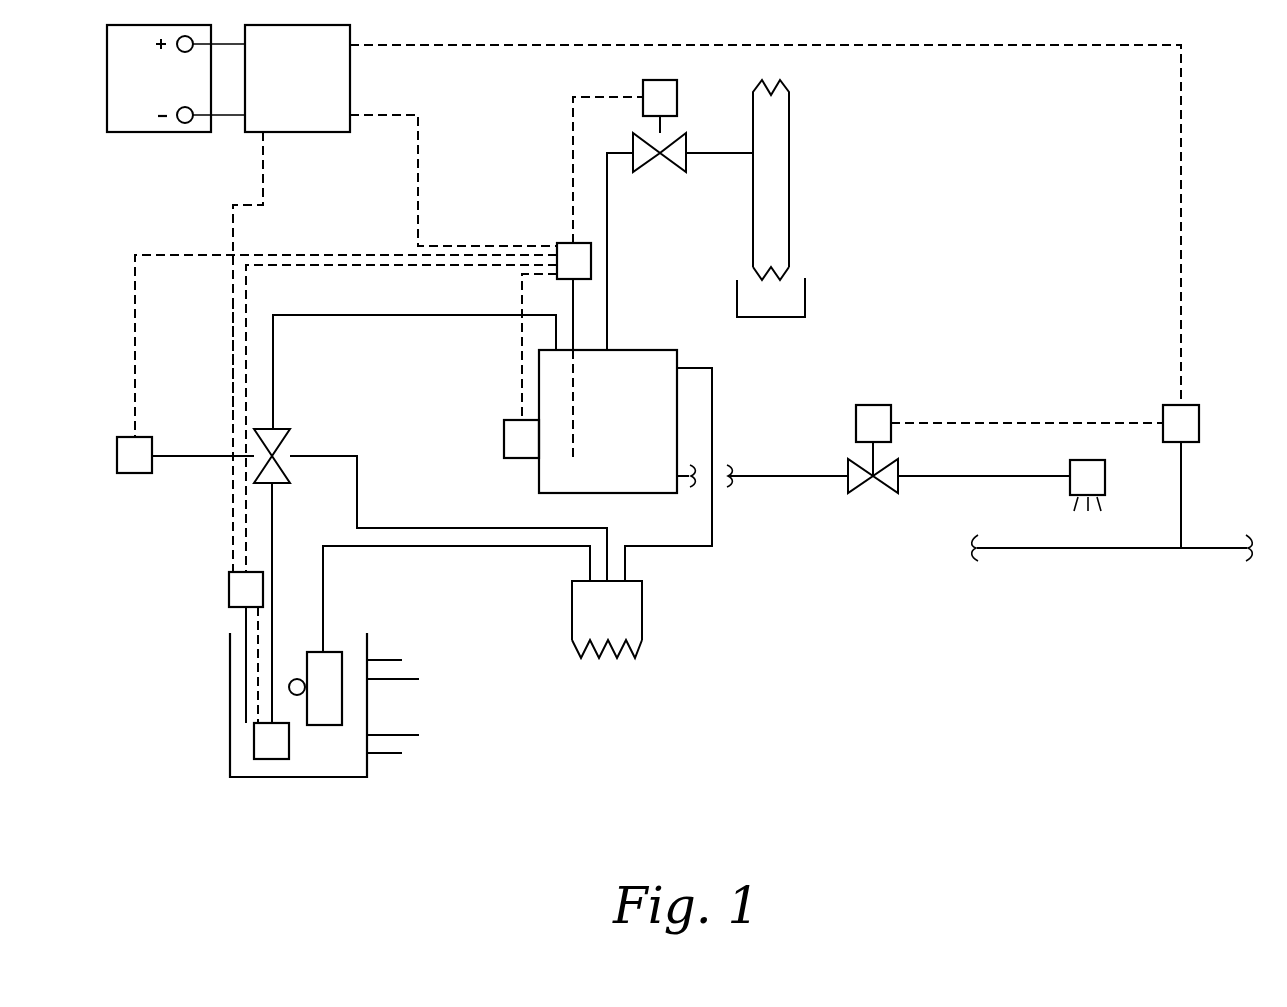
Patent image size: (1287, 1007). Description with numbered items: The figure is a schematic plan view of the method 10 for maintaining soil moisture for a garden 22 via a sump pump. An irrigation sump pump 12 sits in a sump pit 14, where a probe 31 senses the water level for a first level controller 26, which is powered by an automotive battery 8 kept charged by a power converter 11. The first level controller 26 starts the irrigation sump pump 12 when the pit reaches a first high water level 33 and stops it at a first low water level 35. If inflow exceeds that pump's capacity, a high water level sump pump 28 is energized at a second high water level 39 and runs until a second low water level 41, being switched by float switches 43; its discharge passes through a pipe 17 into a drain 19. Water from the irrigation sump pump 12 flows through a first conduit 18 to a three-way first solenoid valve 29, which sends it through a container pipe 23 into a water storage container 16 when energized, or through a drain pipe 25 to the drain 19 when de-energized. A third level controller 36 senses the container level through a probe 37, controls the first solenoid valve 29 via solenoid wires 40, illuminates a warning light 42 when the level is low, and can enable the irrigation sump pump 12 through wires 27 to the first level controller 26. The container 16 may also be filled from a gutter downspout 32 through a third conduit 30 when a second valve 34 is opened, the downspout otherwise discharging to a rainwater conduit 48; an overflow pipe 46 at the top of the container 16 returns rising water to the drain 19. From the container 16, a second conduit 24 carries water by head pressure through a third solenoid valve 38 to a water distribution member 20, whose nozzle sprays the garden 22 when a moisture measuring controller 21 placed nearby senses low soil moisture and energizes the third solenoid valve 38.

The automotive battery 8 is at (350, 78).
The method 10 is at (920, 665).
The power converter 11 is at (141, 122).
The irrigation sump pump 12 is at (275, 745).
The sump pit 14 is at (330, 777).
The water storage container 16 is at (650, 365).
The pipe 17 is at (458, 546).
The first conduit 18 is at (272, 532).
The drain 19 is at (633, 622).
The water distribution member 20 is at (1088, 460).
The moisture measuring controller 21 is at (1181, 420).
The garden 22 is at (1140, 548).
The container pipe 23 is at (380, 315).
The second conduit 24 is at (1015, 476).
The drain pipe 25 is at (480, 528).
The first level controller 26 is at (229, 590).
The wires 27 is at (240, 355).
The high water level sump pump 28 is at (342, 693).
The first solenoid valve 29 is at (290, 436).
The third conduit 30 is at (607, 218).
The probe 31 is at (246, 667).
The gutter downspout 32 is at (789, 143).
The first high water level 33 is at (410, 737).
The second valve 34 is at (660, 80).
The first low water level 35 is at (390, 755).
The third level controller 36 is at (565, 243).
The probe 37 is at (573, 432).
The third solenoid valve 38 is at (873, 405).
The second high water level 39 is at (390, 660).
The solenoid wires 40 is at (293, 252).
The second low water level 41 is at (405, 679).
The warning light 42 is at (513, 438).
The float switches 43 is at (297, 678).
The overflow pipe 46 is at (712, 525).
The rainwater conduit 48 is at (805, 297).